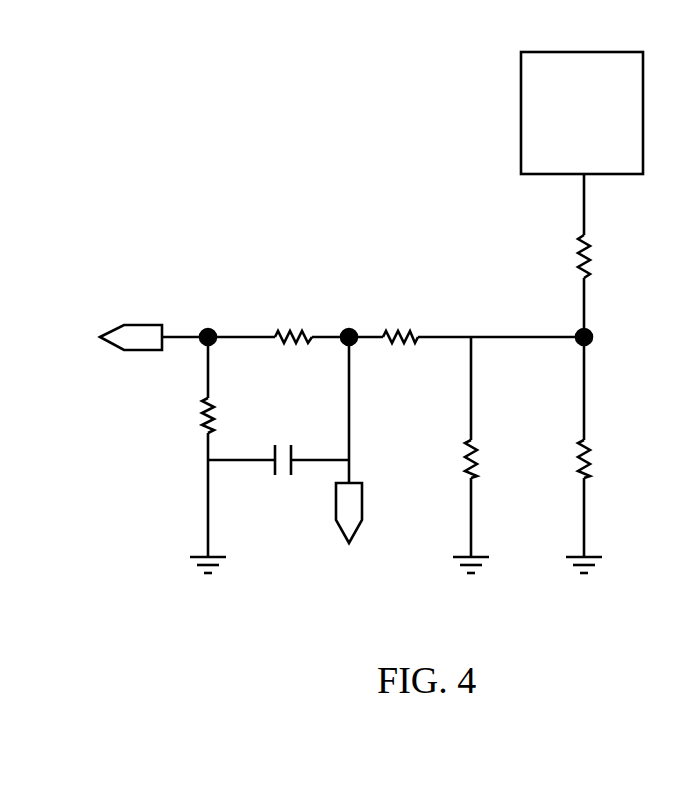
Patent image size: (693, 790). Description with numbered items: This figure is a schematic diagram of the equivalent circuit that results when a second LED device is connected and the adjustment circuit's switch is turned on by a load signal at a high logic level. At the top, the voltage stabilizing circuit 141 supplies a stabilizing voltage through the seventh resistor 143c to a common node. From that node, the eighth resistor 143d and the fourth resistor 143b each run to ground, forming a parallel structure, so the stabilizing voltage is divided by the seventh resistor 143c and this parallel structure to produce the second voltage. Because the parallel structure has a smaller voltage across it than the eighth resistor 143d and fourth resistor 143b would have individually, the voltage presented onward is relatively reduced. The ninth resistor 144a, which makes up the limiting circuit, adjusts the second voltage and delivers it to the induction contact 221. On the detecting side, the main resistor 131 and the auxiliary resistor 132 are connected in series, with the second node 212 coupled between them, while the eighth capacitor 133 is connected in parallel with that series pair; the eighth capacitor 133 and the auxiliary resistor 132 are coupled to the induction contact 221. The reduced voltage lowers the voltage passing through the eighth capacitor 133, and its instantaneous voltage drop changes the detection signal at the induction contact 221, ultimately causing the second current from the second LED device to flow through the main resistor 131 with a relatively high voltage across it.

The voltage stabilizing circuit 141 is at (582, 143).
The seventh resistor 143c is at (586, 250).
The eighth resistor 143d is at (586, 447).
The fourth resistor 143b is at (473, 467).
The ninth resistor 144a is at (400, 328).
The auxiliary resistor 132 is at (292, 328).
The main resistor 131 is at (208, 436).
The eighth capacitor 133 is at (275, 465).
The second node 212 is at (135, 352).
The induction contact 221 is at (349, 546).